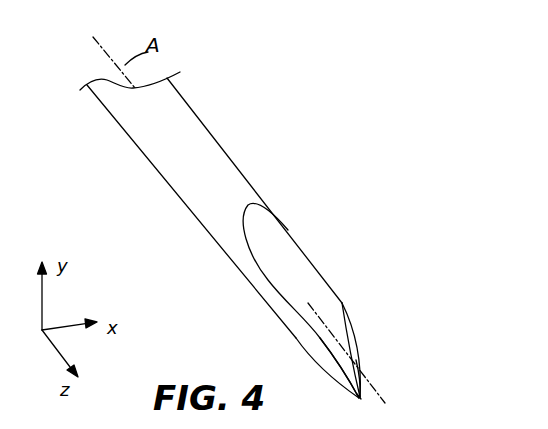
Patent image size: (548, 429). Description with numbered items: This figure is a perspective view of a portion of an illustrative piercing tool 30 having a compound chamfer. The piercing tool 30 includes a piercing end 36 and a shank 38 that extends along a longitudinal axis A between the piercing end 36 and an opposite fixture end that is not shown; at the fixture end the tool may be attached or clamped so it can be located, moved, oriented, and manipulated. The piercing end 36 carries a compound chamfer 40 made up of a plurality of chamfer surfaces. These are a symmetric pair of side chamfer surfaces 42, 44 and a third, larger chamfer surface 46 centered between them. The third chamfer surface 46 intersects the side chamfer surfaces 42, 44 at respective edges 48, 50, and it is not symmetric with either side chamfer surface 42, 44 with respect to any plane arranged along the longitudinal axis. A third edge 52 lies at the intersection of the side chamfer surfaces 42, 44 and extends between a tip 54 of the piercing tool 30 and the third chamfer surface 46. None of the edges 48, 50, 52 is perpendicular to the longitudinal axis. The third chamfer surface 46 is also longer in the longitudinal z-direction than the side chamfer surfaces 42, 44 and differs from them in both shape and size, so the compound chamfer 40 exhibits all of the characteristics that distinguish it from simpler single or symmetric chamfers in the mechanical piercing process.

The piercing tool 30 is at (272, 95).
The piercing end 36 is at (209, 299).
The shank 38 is at (175, 117).
The compound chamfer 40 is at (303, 263).
The side chamfer surface 42 is at (329, 367).
The side chamfer surface 44 is at (350, 345).
The third chamfer surface 46 is at (275, 235).
The edge 48 is at (303, 333).
The edge 50 is at (347, 345).
The third edge 52 is at (353, 378).
The tip 54 is at (361, 398).